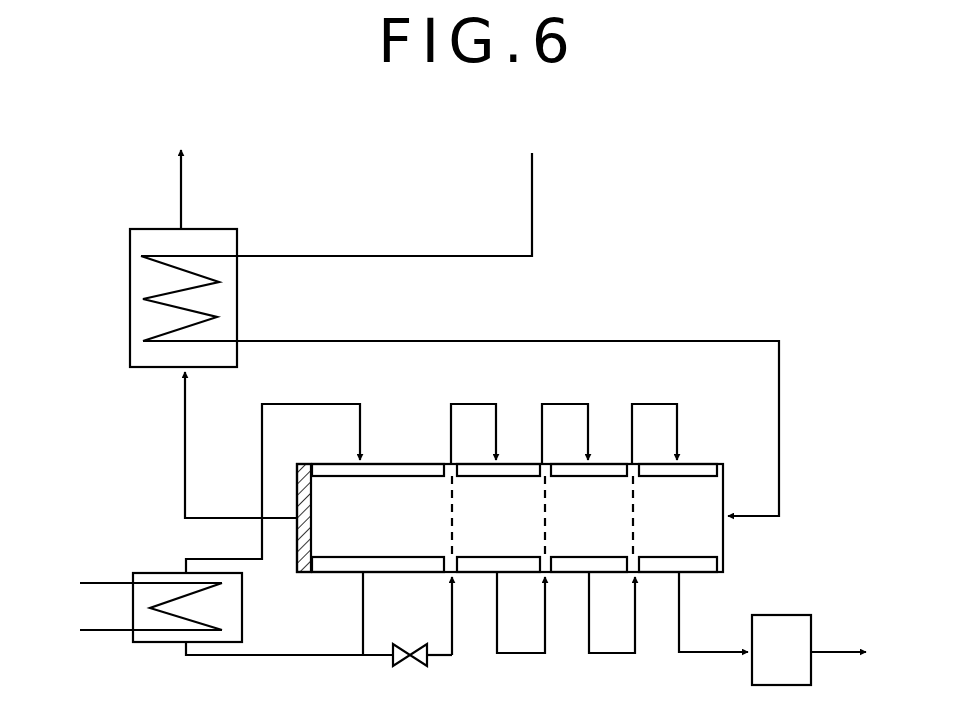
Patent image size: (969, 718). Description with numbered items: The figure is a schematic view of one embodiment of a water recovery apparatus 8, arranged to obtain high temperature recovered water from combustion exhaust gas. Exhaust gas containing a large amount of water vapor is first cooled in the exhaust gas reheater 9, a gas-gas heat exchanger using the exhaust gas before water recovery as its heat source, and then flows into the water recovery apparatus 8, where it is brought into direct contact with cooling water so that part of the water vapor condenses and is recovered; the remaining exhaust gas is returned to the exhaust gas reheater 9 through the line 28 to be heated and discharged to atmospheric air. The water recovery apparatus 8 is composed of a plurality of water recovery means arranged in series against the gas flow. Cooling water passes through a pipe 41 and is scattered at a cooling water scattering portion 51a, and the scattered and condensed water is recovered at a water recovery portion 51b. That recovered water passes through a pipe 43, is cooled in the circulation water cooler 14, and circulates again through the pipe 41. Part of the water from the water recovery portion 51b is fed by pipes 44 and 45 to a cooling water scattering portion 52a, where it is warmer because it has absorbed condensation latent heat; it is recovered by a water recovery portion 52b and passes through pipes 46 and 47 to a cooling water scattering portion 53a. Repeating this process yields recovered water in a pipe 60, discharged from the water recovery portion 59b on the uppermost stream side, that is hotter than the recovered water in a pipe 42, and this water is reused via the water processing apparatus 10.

The water recovery apparatus 8 is at (818, 524).
The exhaust gas reheater 9 is at (197, 258).
The water processing apparatus 10 is at (809, 650).
The circulation water cooler 14 is at (161, 607).
The gas line 28 is at (461, 406).
The pipe 41 is at (273, 471).
The pipe 42 is at (336, 613).
The pipe 43 is at (319, 666).
The pipe 44 is at (473, 616).
The pipe 45 is at (473, 417).
The pipe 46 is at (591, 612).
The pipe 47 is at (565, 417).
The cooling water scattering portion 51a is at (382, 497).
The water recovery portion 51b is at (382, 539).
The cooling water scattering portion 52a is at (499, 497).
The water recovery portion 52b is at (499, 539).
The cooling water scattering portion 53a is at (590, 497).
The water recovery portion 59b is at (679, 538).
The pipe 60 is at (713, 612).